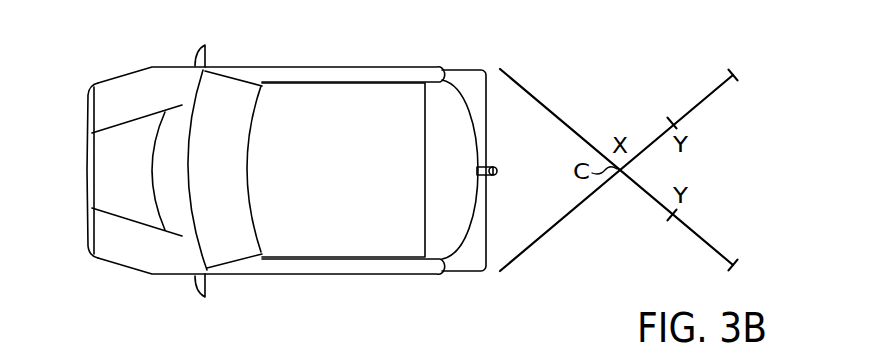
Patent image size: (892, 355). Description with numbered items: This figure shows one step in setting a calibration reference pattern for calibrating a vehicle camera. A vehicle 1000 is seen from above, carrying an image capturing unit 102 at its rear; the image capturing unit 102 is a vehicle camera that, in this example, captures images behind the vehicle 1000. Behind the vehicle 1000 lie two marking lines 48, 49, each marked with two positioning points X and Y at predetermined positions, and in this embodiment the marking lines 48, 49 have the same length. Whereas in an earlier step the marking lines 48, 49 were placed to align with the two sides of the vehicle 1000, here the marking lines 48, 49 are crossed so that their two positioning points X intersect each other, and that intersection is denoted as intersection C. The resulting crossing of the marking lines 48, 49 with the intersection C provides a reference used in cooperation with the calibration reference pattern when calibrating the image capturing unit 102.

The vehicle 1000 is at (360, 240).
The image capturing unit 102 is at (477, 172).
The marking line 48 is at (712, 92).
The marking line 49 is at (710, 246).